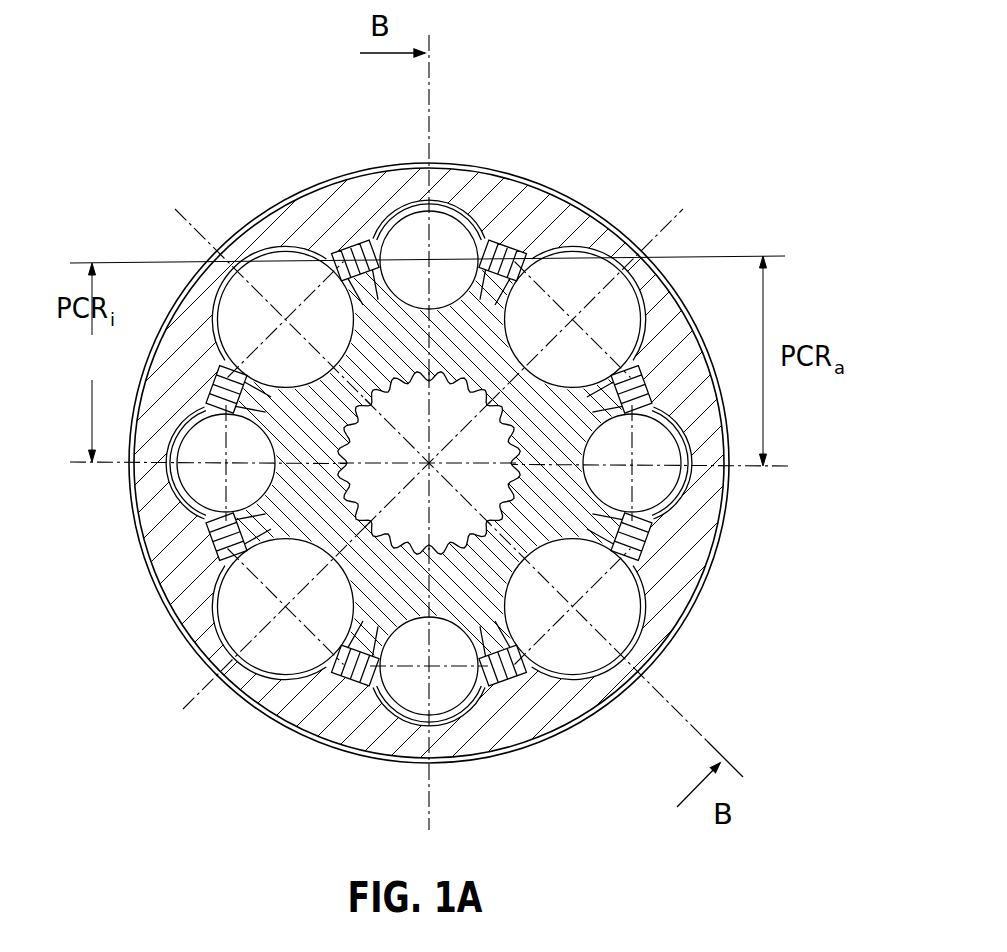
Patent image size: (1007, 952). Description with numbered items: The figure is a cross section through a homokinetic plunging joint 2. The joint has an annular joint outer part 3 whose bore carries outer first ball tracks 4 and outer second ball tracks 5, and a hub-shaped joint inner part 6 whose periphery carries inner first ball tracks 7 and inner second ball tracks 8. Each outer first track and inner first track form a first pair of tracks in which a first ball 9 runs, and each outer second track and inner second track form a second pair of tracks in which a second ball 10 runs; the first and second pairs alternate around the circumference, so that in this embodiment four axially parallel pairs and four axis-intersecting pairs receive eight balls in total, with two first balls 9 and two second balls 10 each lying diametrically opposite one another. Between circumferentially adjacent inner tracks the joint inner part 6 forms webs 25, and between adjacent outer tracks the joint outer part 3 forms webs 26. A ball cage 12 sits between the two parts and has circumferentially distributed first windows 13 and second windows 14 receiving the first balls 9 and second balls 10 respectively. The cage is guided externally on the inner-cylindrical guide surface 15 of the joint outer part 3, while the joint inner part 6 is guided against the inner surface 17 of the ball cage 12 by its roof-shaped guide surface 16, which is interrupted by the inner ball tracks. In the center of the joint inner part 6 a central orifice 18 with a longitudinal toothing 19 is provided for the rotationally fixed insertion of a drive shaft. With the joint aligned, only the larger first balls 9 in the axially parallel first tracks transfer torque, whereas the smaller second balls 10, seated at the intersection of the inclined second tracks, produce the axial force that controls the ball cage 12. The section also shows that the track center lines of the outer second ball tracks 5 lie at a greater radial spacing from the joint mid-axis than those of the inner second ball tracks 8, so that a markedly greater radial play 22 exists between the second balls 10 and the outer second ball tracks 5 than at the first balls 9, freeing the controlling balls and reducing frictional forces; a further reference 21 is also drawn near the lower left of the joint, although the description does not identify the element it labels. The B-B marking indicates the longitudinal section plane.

The homokinetic plunging joint 2 is at (250, 82).
The joint outer part 3 is at (528, 197).
The outer first ball tracks 4 is at (650, 672).
The outer second ball tracks 5 is at (492, 745).
The joint inner part 6 is at (170, 575).
The inner first ball tracks 7 is at (598, 712).
The inner second ball tracks 8 is at (418, 720).
The first balls 9 is at (625, 617).
The second balls 10 is at (540, 705).
The ball cage 12 is at (340, 243).
The first windows 13 is at (660, 584).
The second windows 14 is at (665, 560).
The inner-cylindrical guide surface 15 is at (373, 700).
The roof-shaped guide surface 16 is at (330, 680).
The inner surface of the ball cage 17 is at (222, 645).
The central orifice 18 is at (429, 463).
The longitudinal toothing 19 is at (476, 476).
The planet gear 21 is at (257, 662).
The radial play 22 is at (413, 205).
The webs 25 is at (180, 364).
The webs 26 is at (550, 222).